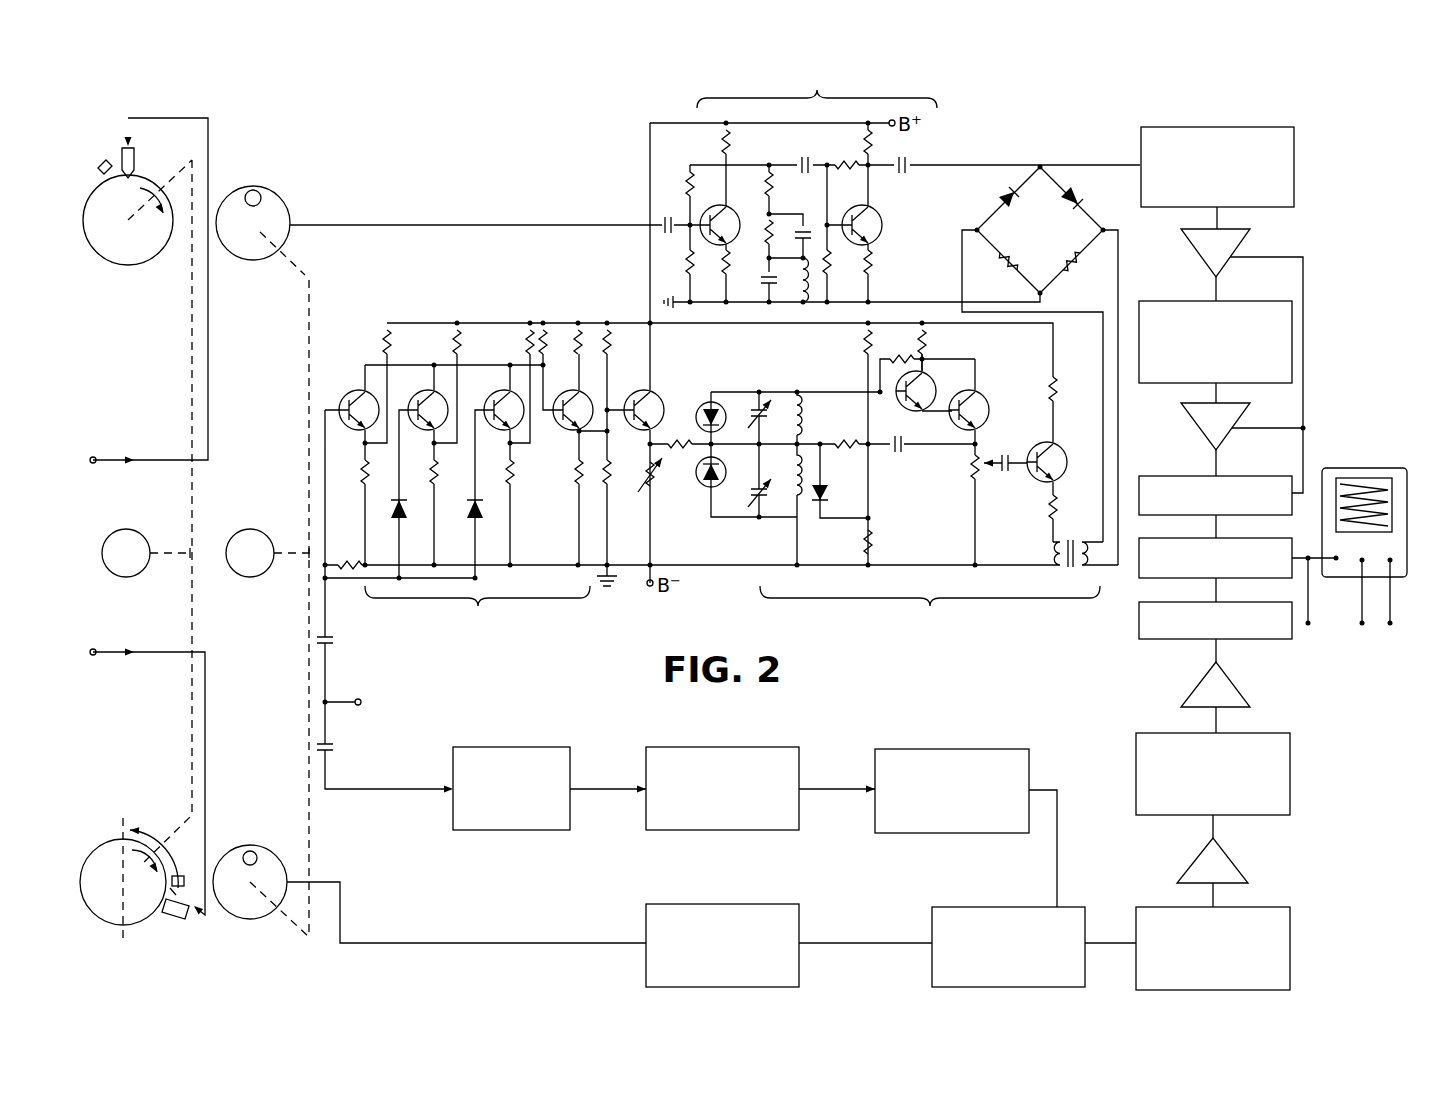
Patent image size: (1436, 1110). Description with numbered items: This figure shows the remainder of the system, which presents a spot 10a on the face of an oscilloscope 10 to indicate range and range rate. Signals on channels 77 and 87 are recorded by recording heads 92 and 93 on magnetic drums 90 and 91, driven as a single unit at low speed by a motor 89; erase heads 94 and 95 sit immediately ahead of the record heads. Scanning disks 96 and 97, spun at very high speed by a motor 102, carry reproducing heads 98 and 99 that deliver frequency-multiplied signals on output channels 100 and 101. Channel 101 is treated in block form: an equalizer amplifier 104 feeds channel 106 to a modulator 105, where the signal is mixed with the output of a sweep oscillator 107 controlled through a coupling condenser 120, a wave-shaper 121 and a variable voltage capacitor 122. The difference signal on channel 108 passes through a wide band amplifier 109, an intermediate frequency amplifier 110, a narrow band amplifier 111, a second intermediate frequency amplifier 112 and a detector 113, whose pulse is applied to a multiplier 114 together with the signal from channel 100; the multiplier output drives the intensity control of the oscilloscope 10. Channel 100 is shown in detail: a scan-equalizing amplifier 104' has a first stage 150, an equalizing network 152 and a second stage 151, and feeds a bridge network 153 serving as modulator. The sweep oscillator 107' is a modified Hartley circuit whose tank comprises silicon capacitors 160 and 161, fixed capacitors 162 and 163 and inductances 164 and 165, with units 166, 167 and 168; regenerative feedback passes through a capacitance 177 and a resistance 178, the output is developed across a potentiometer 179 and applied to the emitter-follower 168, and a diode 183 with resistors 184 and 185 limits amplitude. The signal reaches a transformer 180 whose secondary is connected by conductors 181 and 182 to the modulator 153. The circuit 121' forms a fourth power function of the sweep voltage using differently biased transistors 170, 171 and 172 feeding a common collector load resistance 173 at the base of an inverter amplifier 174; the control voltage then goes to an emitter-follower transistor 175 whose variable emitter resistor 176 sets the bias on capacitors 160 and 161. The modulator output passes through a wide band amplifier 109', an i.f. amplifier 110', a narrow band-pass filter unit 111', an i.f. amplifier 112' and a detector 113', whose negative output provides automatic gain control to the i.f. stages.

The oscilloscope 10 is at (1352, 468).
The spot 10a is at (1370, 498).
The channel 77 is at (210, 136).
The channel 87 is at (207, 690).
The motor 89 is at (141, 530).
The magnetic drum 90 is at (123, 265).
The magnetic drum 91 is at (110, 841).
The recording head 92 is at (134, 153).
The recording head 93 is at (178, 914).
The erase head 94 is at (100, 162).
The erase head 95 is at (180, 874).
The scanning disk 96 is at (240, 258).
The scanning disk 97 is at (270, 852).
The reproducing head 98 is at (250, 190).
The reproducing head 99 is at (248, 851).
The output channel 100 is at (440, 225).
The output channel 101 is at (513, 943).
The motor 102 is at (262, 530).
The equalizer amplifier 104 is at (722, 930).
The scan-equalizing amplifier 104' is at (817, 88).
The modulator 105 is at (995, 907).
The input channel 106 is at (868, 943).
The sweep oscillator 107 is at (952, 774).
The sweep oscillator circuit 107' is at (930, 608).
The output channel 108 is at (1115, 943).
The wide band amplifier 109 is at (1233, 930).
The wide band amplifier 109' is at (1252, 167).
The intermediate frequency amplifier 110 is at (1234, 856).
The i.f. amplifier 110' is at (1251, 247).
The narrow band amplifier 111 is at (1195, 754).
The narrow band-pass filter unit 111' is at (1215, 321).
The intermediate frequency amplifier 112 is at (1235, 683).
The i.f. amplifier 112' is at (1195, 426).
The detector 113 is at (1212, 634).
The detector 113' is at (1215, 473).
The multiplier 114 is at (1172, 538).
The coupling condenser 120 is at (332, 749).
The wave-shaper 121 is at (511, 772).
The wave-shaper circuit 121' is at (477, 608).
The variable voltage capacitor 122 is at (728, 747).
The first stage 150 is at (728, 210).
The second stage 151 is at (880, 222).
The equalizing network 152 is at (785, 228).
The bridge network 153 is at (1057, 243).
The silicon capacitor 160 is at (712, 402).
The silicon capacitor 161 is at (710, 488).
The fixed capacitor 162 is at (776, 404).
The fixed capacitor 163 is at (766, 507).
The inductance 164 is at (808, 417).
The inductance 165 is at (800, 467).
The transistor unit 166 is at (930, 392).
The transistor unit 167 is at (990, 404).
The emitter-follower 168 is at (1055, 450).
The transistor 170 is at (350, 394).
The transistor 171 is at (420, 394).
The transistor 172 is at (494, 394).
The common collector load resistance 173 is at (557, 328).
The inverter amplifier 174 is at (562, 432).
The transistor 175 is at (652, 394).
The variable emitter resistor 176 is at (656, 478).
The capacitance 177 is at (900, 452).
The resistance 178 is at (845, 441).
The potentiometer 179 is at (970, 469).
The transformer 180 is at (1080, 532).
The conductor 181 is at (1118, 276).
The conductor 182 is at (962, 279).
The diode 183 is at (830, 494).
The resistor 184 is at (862, 341).
The resistor 185 is at (872, 542).